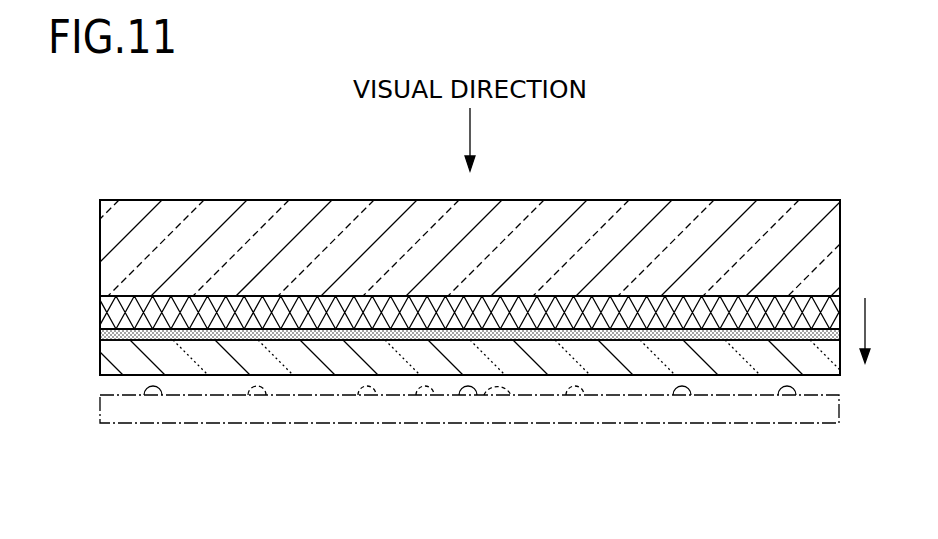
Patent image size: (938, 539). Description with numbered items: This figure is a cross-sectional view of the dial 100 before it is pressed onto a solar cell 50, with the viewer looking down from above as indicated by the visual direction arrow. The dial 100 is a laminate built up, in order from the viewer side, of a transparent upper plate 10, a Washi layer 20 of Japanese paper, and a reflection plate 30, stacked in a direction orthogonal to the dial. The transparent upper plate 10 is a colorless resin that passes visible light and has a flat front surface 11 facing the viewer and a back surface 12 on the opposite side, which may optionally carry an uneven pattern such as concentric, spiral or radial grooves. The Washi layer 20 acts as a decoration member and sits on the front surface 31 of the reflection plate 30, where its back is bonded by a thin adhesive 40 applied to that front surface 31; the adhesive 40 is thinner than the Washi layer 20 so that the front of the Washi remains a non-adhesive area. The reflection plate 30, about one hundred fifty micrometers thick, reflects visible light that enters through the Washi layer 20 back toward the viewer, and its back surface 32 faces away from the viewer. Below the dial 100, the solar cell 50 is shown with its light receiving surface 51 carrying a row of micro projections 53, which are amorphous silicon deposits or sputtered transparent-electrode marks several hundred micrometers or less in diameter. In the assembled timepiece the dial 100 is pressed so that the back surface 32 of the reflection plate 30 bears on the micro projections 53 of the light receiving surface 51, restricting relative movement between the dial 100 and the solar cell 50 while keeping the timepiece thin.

The dial 100 is at (827, 199).
The transparent upper plate 10 is at (100, 252).
The front surface 11 is at (147, 200).
The back surface 12 is at (228, 304).
The Washi layer 20 is at (100, 318).
The adhesive 40 is at (100, 333).
The reflection plate 30 is at (100, 360).
The front surface 31 is at (290, 330).
The back surface 32 is at (347, 376).
The solar cell 50 is at (645, 410).
The light receiving surface 51 is at (434, 396).
The micro projections 53 is at (511, 396).